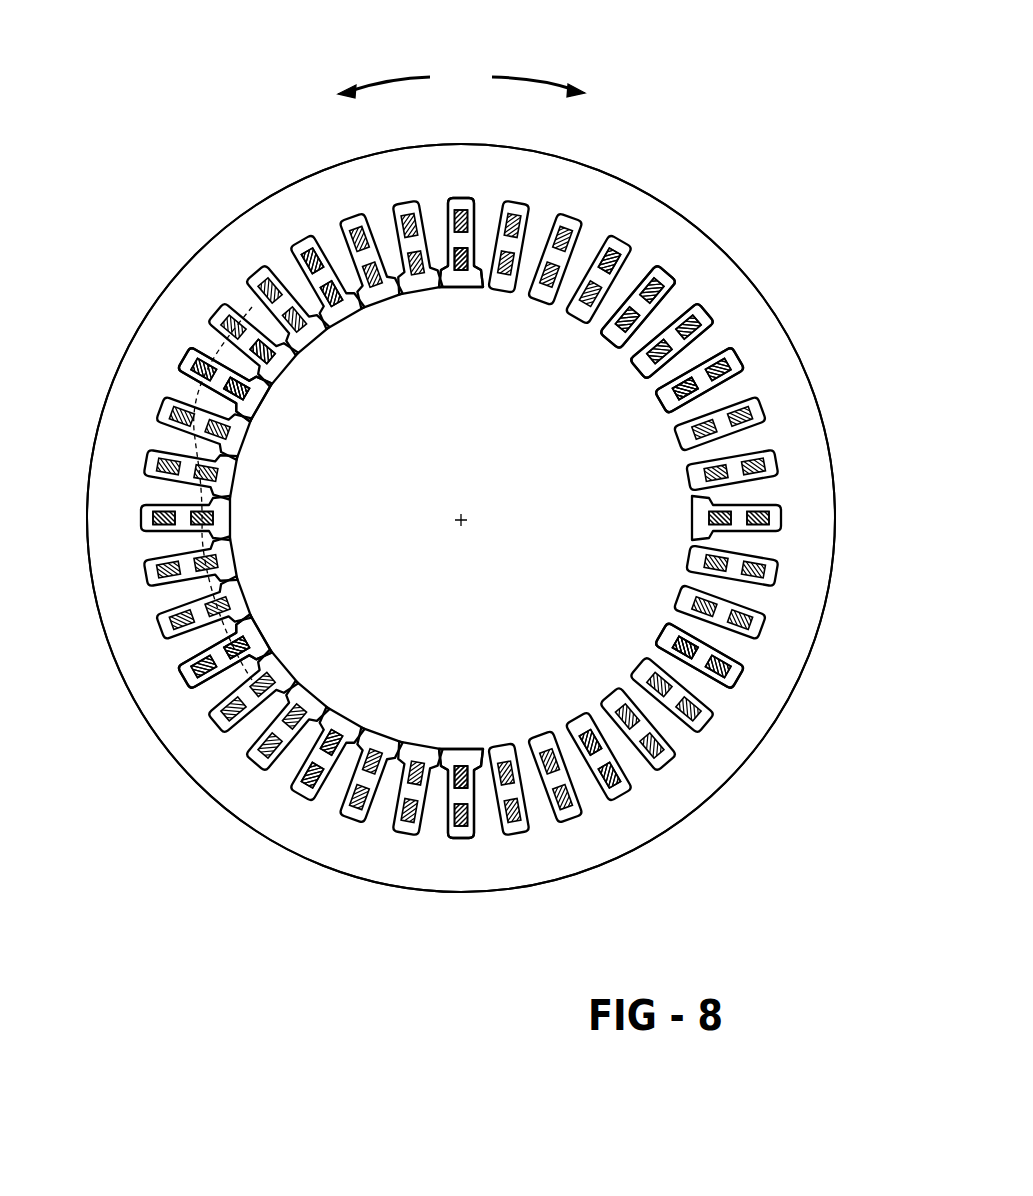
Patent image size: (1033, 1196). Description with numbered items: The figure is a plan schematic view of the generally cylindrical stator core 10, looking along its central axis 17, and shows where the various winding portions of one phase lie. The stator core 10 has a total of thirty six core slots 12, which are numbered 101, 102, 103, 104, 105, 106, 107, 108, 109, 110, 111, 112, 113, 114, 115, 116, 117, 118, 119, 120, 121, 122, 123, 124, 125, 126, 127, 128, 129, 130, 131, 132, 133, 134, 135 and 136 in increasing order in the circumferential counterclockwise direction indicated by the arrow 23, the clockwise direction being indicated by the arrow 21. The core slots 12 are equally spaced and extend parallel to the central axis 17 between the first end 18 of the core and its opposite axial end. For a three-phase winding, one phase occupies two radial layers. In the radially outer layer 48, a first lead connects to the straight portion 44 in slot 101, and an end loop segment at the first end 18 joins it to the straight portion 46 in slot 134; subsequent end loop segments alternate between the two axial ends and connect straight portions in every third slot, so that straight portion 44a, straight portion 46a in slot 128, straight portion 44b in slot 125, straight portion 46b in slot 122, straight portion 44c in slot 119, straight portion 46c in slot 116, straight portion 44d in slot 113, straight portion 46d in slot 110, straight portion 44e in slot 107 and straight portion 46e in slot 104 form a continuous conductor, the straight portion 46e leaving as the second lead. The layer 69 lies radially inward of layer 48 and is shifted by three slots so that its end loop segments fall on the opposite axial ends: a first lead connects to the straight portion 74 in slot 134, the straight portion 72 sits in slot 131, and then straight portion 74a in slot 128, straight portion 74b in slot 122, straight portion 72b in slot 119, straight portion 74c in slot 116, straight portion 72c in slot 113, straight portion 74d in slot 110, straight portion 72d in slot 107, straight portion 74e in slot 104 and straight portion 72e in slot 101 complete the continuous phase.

The stator core 10 is at (652, 155).
The core slots 12 is at (735, 346).
The central axis 17 is at (461, 515).
The first end 18 is at (263, 228).
The arrow indicating circumferential clockwise direction 21 is at (523, 78).
The arrow indicating circumferential counterclockwise direction 23 is at (392, 78).
The straight portion 44 is at (155, 528).
The straight portion 44a is at (318, 245).
The straight portion 44b is at (627, 252).
The straight portion 44c is at (765, 530).
The straight portion 44d is at (630, 780).
The straight portion 44e is at (310, 785).
The straight portion 46 is at (190, 378).
The straight portion 46a is at (455, 215).
The straight portion 46b is at (743, 383).
The straight portion 46c is at (732, 686).
The straight portion 46d is at (478, 835).
The straight portion 46e is at (186, 668).
The layer 48 is at (252, 307).
The layer 69 is at (210, 455).
The straight portion 72 is at (343, 255).
The straight portion 72b is at (708, 521).
The straight portion 72c is at (583, 737).
The straight portion 72d is at (338, 730).
The straight portion 72e is at (215, 520).
The straight portion 74 is at (245, 392).
The straight portion 74a is at (462, 273).
The straight portion 74b is at (686, 392).
The straight portion 74c is at (680, 642).
The straight portion 74d is at (462, 765).
The straight portion 74e is at (250, 643).
The slot number 101 is at (166, 517).
The slot number 102 is at (175, 565).
The slot number 103 is at (188, 611).
The slot number 104 is at (213, 655).
The slot number 105 is at (244, 694).
The slot number 106 is at (283, 729).
The slot number 107 is at (322, 758).
The slot number 108 is at (366, 782).
The slot number 109 is at (412, 798).
The slot number 110 is at (460, 806).
The slot number 111 is at (508, 799).
The slot number 112 is at (554, 782).
The slot number 113 is at (598, 759).
The slot number 114 is at (640, 729).
The slot number 115 is at (679, 695).
The slot number 116 is at (710, 655).
The slot number 117 is at (734, 612).
The slot number 118 is at (748, 566).
The slot number 119 is at (756, 518).
The slot number 120 is at (748, 470).
The slot number 121 is at (733, 424).
The slot number 122 is at (711, 380).
The slot number 123 is at (679, 341).
The slot number 124 is at (642, 307).
The slot number 125 is at (598, 279).
The slot number 126 is at (555, 255).
The slot number 127 is at (509, 238).
The slot number 128 is at (461, 232).
The slot number 129 is at (413, 238).
The slot number 130 is at (367, 254).
The slot number 131 is at (323, 276).
The slot number 132 is at (280, 306).
The slot number 133 is at (241, 340).
The slot number 134 is at (212, 379).
The slot number 135 is at (190, 423).
The slot number 136 is at (172, 469).